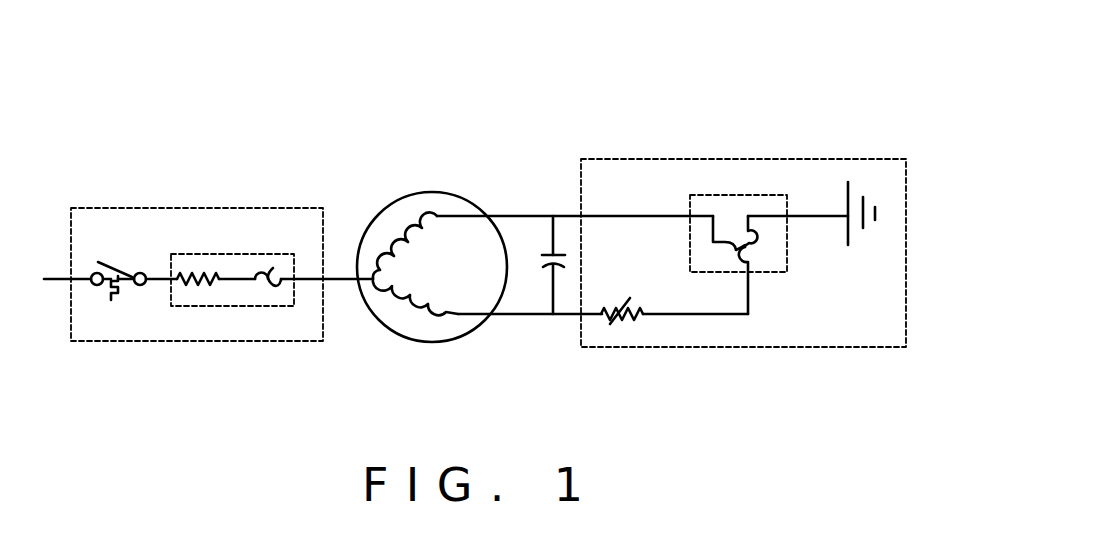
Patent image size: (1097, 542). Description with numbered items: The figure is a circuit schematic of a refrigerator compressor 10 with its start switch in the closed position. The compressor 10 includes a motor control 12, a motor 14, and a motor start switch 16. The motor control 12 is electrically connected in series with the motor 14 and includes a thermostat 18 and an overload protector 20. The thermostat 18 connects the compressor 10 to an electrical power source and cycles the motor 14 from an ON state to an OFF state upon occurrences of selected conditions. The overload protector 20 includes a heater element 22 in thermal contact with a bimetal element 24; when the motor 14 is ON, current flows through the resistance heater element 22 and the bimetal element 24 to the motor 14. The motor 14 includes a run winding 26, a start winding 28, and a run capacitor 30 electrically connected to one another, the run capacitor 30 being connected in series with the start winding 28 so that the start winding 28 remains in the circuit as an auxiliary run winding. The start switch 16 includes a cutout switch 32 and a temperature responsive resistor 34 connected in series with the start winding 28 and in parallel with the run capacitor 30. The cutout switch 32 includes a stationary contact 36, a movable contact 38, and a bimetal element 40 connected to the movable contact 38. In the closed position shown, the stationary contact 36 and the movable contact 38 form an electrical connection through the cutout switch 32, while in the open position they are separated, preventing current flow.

The refrigerator compressor 10 is at (683, 90).
The motor control 12 is at (130, 208).
The motor 14 is at (428, 190).
The motor start switch 16 is at (772, 158).
The thermostat 18 is at (127, 293).
The overload protector 20 is at (233, 250).
The heater element 22 is at (205, 283).
The bimetal element 24 is at (263, 287).
The run winding 26 is at (436, 243).
The start winding 28 is at (432, 303).
The run capacitor 30 is at (548, 264).
The cutout switch 32 is at (768, 195).
The temperature responsive resistor 34 is at (627, 318).
The stationary contact 36 is at (755, 260).
The movable contact 38 is at (757, 239).
The bimetal element 40 is at (717, 253).